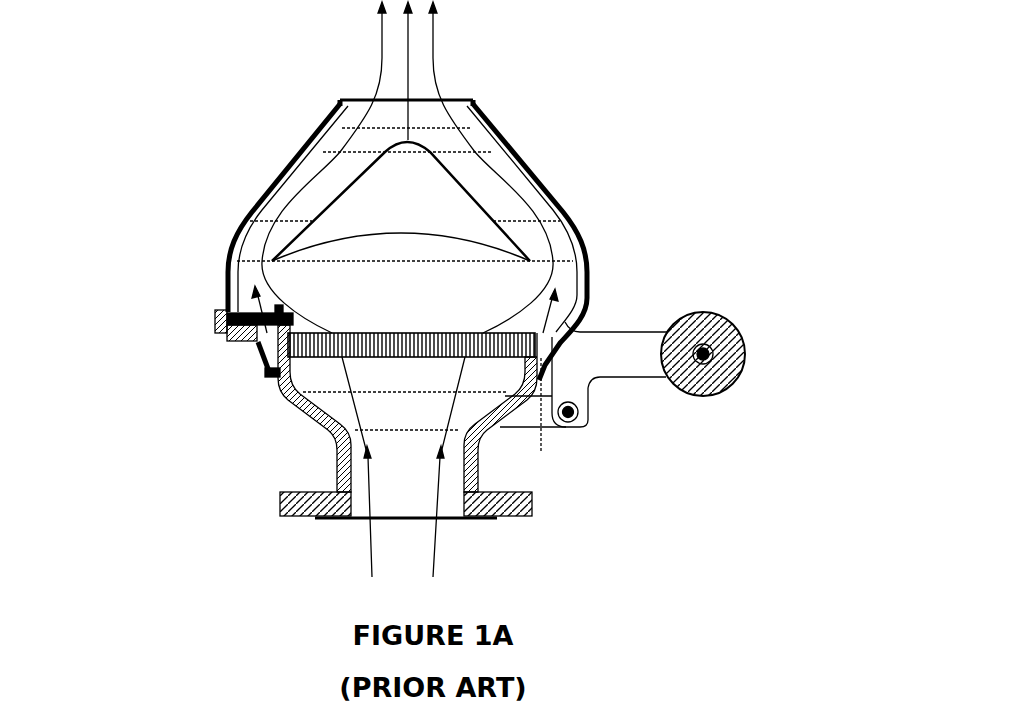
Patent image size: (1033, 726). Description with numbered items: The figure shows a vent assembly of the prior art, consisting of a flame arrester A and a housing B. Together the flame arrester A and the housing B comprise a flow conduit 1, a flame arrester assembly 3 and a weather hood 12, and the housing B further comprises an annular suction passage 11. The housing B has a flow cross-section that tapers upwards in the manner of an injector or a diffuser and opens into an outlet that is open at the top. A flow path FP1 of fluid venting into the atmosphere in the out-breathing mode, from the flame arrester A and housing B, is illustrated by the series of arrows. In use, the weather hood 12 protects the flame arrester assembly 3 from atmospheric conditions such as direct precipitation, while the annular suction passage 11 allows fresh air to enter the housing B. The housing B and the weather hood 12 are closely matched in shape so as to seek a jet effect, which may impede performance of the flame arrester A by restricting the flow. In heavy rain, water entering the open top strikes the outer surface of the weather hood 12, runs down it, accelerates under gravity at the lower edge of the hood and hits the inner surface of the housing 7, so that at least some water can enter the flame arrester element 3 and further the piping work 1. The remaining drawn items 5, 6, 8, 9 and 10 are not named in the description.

The flow conduit 1 is at (507, 450).
The flame arrester assembly 3 is at (293, 432).
The conical flow deflector 5 is at (528, 132).
The outlet 6 is at (470, 70).
The housing 7 is at (243, 228).
The hinge pin / bolt 8 is at (712, 312).
The clamping flange 9 is at (225, 310).
The bracket 10 is at (608, 404).
The annular suction passage 11 is at (238, 398).
The weather hood 12 is at (558, 185).
The flame arrester A is at (220, 370).
The housing B is at (600, 126).
The flow path FP1 is at (368, 530).